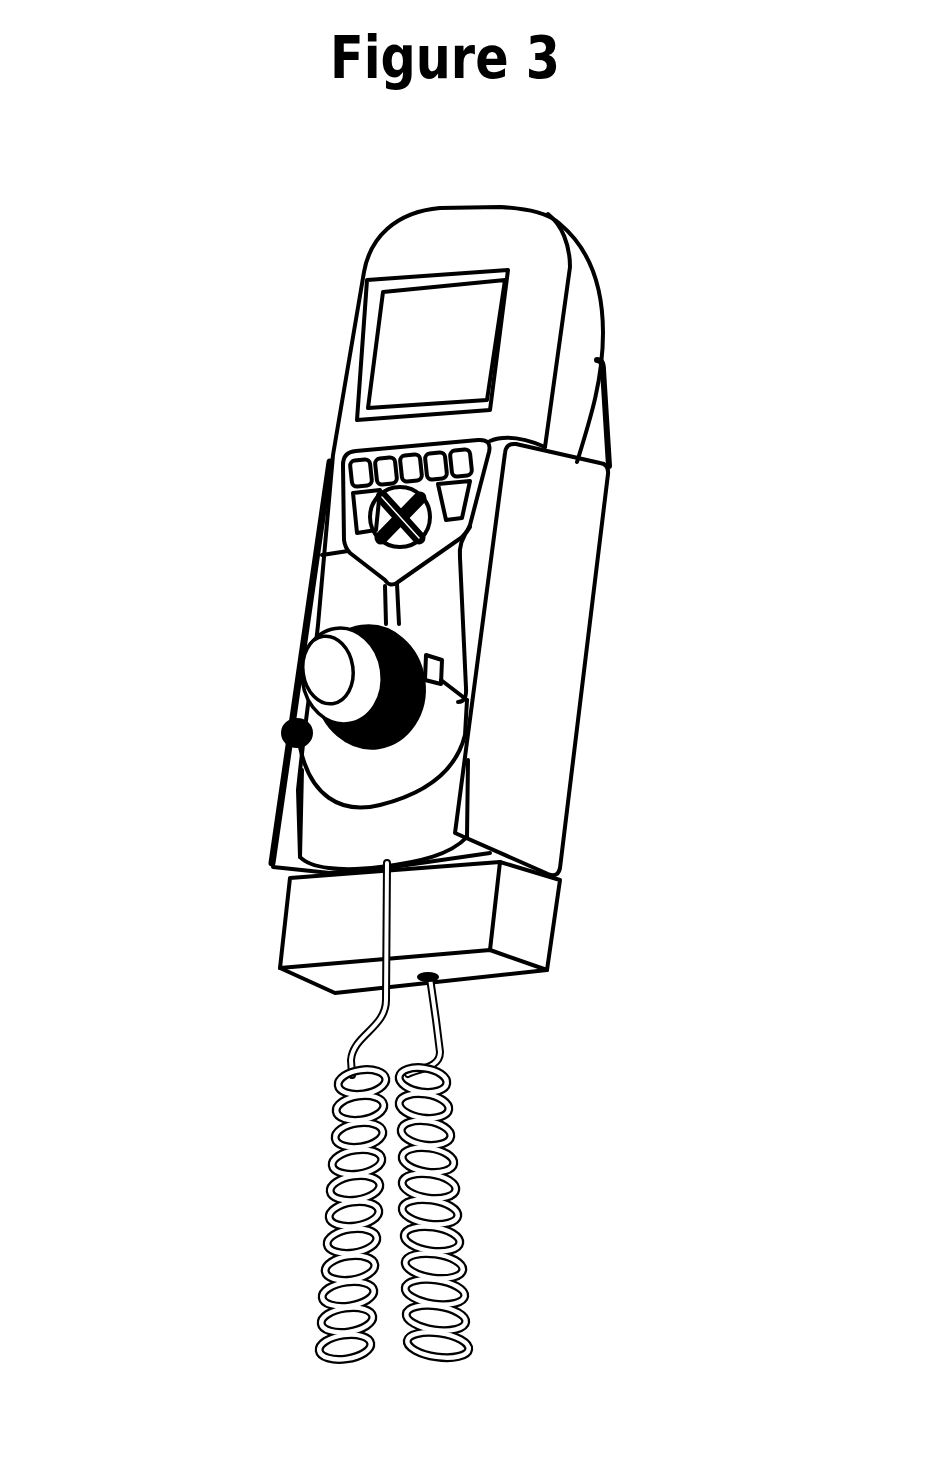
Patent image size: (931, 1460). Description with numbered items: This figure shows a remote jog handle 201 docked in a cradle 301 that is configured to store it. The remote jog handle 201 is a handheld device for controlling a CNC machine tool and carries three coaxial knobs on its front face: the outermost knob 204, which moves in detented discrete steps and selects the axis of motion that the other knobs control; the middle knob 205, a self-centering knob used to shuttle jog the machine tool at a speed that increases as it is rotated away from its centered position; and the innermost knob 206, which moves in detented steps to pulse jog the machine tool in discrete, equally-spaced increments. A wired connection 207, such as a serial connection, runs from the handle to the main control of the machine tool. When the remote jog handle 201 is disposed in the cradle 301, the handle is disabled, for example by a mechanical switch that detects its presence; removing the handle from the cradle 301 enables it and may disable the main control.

The remote jog handle 201 is at (596, 250).
The outermost knob 204 is at (290, 725).
The middle knob 205 is at (312, 623).
The innermost knob 206 is at (323, 670).
The wired connection 207 is at (486, 1166).
The cradle 301 is at (549, 582).